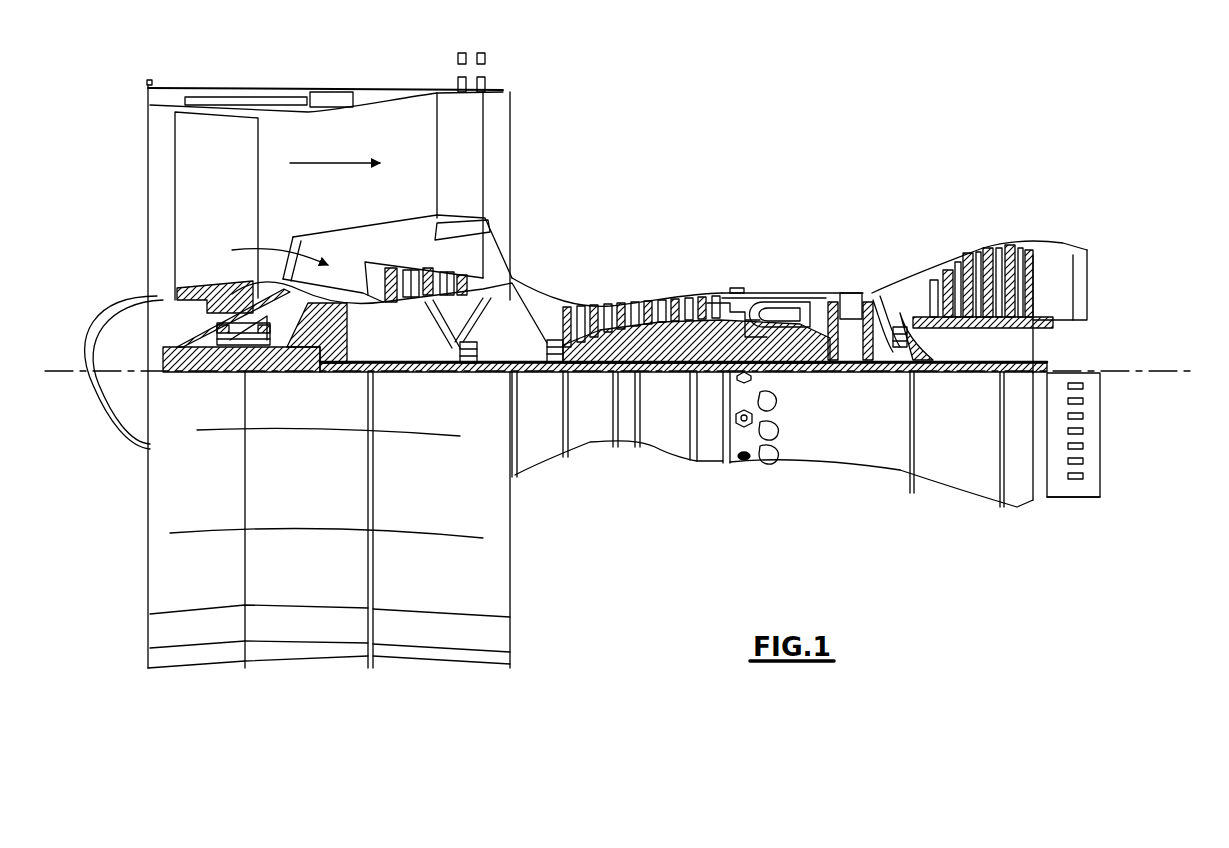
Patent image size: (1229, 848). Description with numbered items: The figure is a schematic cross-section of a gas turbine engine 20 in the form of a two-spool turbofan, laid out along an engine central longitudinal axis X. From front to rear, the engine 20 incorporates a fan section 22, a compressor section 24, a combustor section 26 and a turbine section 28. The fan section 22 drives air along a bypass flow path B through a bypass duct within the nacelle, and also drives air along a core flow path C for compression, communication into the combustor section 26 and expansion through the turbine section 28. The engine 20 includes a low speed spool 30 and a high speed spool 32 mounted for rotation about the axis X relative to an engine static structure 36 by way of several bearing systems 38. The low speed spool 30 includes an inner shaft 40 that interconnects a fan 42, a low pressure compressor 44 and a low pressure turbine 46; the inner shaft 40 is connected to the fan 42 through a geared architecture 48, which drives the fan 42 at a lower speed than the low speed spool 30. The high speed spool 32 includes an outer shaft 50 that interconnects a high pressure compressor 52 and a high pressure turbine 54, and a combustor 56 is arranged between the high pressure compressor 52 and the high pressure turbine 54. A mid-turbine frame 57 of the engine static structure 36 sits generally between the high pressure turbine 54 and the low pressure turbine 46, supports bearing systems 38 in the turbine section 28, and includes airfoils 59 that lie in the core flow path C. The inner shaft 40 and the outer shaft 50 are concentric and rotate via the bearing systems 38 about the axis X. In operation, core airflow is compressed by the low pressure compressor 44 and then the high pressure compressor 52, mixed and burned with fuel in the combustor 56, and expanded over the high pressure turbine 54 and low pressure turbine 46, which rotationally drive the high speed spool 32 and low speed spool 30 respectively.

The gas turbine engine 20 is at (795, 129).
The fan section 22 is at (355, 60).
The compressor section 24 is at (370, 208).
The combustor section 26 is at (822, 208).
The turbine section 28 is at (1045, 208).
The low speed spool 30 is at (666, 382).
The high speed spool 32 is at (716, 335).
The engine static structure 36 is at (710, 466).
The bearing systems 38 is at (224, 350).
The inner shaft 40 is at (540, 378).
The fan 42 is at (231, 213).
The low pressure compressor 44 is at (443, 275).
The low pressure turbine 46 is at (978, 265).
The geared architecture 48 is at (330, 365).
The outer shaft 50 is at (795, 355).
The high pressure compressor 52 is at (642, 340).
The high pressure turbine 54 is at (848, 300).
The combustor 56 is at (785, 318).
The mid-turbine frame 57 is at (893, 283).
The airfoils 59 is at (922, 355).
The bypass flow path B is at (332, 160).
The core flow path C is at (268, 253).
The engine central longitudinal axis X is at (1180, 372).